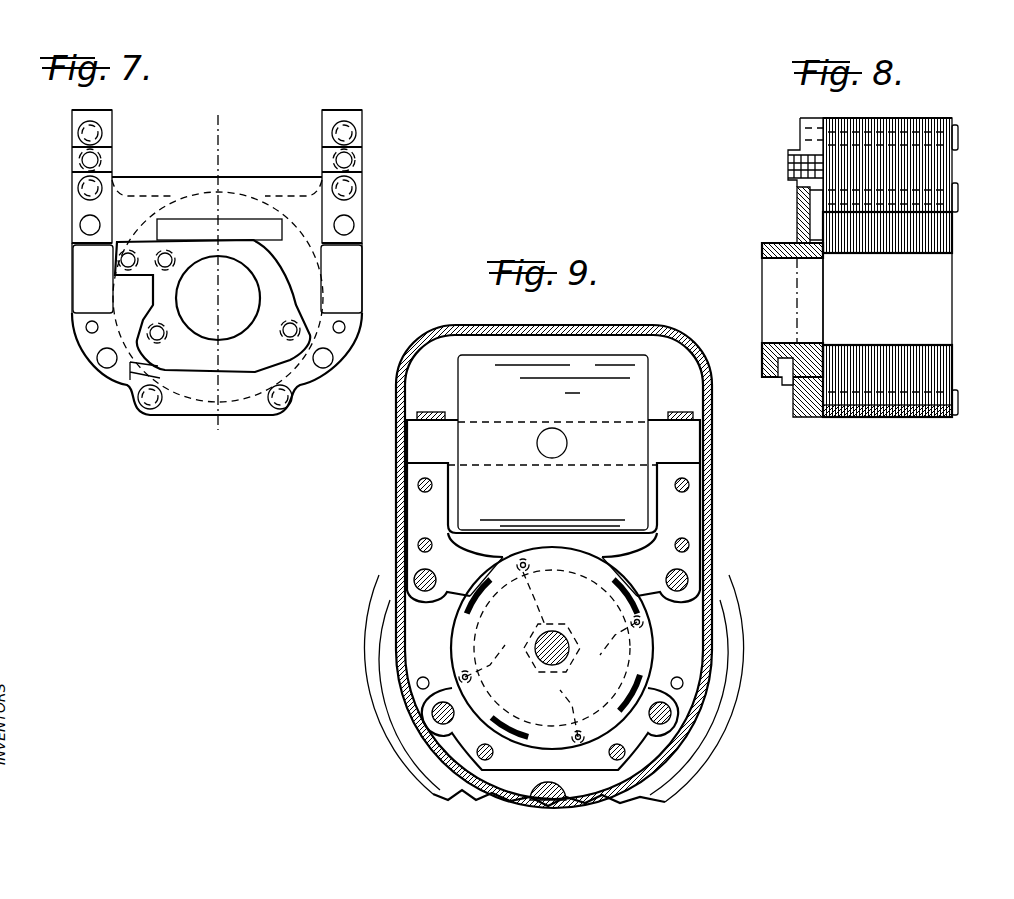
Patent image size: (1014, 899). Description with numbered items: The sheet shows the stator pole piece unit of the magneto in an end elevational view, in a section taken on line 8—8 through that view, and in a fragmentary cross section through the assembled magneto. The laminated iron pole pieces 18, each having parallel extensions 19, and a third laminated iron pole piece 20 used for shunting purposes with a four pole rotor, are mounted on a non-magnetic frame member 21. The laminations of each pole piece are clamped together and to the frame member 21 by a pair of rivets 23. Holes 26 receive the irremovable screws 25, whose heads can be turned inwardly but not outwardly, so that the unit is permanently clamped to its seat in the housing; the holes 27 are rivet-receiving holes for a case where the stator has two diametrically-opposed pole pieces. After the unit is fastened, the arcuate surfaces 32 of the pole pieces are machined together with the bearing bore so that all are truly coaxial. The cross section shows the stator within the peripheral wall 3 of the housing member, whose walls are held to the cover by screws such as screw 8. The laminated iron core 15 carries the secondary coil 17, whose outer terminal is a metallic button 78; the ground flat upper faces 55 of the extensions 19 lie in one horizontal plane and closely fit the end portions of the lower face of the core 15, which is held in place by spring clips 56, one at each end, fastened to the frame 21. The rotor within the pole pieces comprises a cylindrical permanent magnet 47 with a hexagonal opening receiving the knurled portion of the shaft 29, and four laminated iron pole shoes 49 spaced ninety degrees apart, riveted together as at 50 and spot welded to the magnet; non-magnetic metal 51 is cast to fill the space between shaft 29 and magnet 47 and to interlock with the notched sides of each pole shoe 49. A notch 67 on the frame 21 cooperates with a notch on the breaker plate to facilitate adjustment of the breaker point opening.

In FIG. 9, the peripheral wall 3 is at (460, 325).
In FIG. 7, the screw 8 is at (240, 140).
In FIG. 9, the laminated iron core 15 is at (418, 430).
In FIG. 9, the secondary coil 17 is at (515, 365).
In FIG. 7, the pole piece 18 is at (133, 192).
In FIG. 8, the pole piece 18 is at (933, 235).
In FIG. 9, the pole piece 18 is at (478, 557).
In FIG. 8, the extension 19 is at (925, 166).
In FIG. 9, the extension 19 is at (420, 506).
In FIG. 8, the third pole piece 20 is at (935, 381).
In FIG. 9, the third pole piece 20 is at (555, 758).
In FIG. 7, the frame member 21 is at (350, 277).
In FIG. 8, the frame member 21 is at (815, 125).
In FIG. 7, the rivet 23 is at (80, 188).
In FIG. 8, the rivet 23 is at (958, 137).
In FIG. 9, the rivet 23 is at (418, 485).
In FIG. 9, the irremovable screw 25 is at (415, 578).
In FIG. 7, the hole 26 is at (82, 223).
In FIG. 7, the rivet-receiving hole 27 is at (88, 327).
In FIG. 9, the rivet-receiving hole 27 is at (418, 684).
In FIG. 9, the shaft 29 is at (556, 636).
In FIG. 9, the arcuate surface 32 is at (470, 595).
In FIG. 9, the permanent magnet 47 is at (470, 663).
In FIG. 9, the pole shoe 49 is at (540, 548).
In FIG. 9, the rivet 50 is at (537, 610).
In FIG. 9, the non-magnetic metal 51 is at (560, 560).
In FIG. 7, the upper face 55 is at (92, 99).
In FIG. 8, the upper face 55 is at (934, 109).
In FIG. 9, the upper face 55 is at (438, 457).
In FIG. 9, the spring clip 56 is at (435, 410).
In FIG. 7, the notch 67 is at (130, 378).
In FIG. 8, the notch 67 is at (778, 389).
In FIG. 9, the metallic button 78 is at (560, 450).